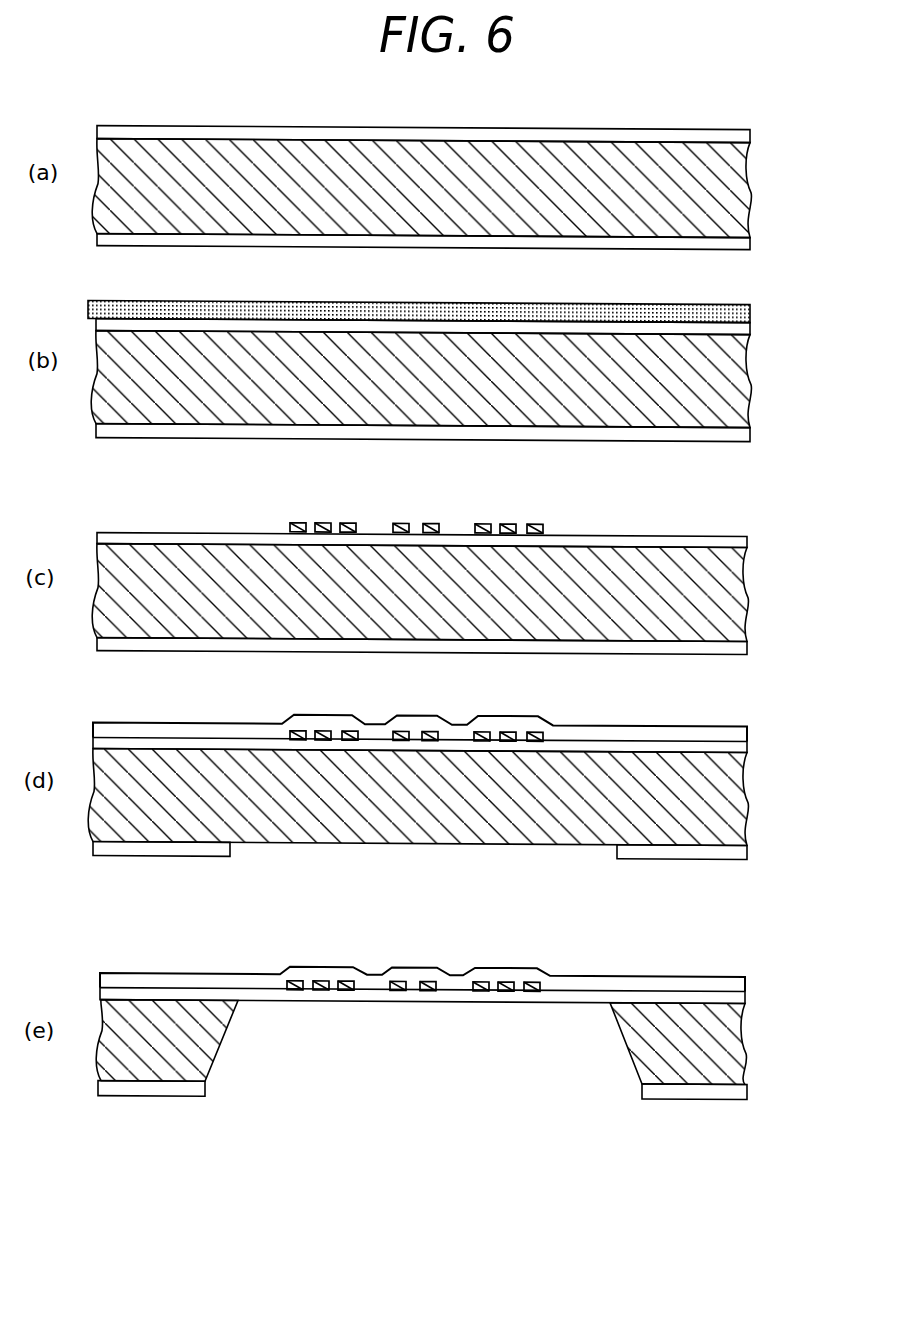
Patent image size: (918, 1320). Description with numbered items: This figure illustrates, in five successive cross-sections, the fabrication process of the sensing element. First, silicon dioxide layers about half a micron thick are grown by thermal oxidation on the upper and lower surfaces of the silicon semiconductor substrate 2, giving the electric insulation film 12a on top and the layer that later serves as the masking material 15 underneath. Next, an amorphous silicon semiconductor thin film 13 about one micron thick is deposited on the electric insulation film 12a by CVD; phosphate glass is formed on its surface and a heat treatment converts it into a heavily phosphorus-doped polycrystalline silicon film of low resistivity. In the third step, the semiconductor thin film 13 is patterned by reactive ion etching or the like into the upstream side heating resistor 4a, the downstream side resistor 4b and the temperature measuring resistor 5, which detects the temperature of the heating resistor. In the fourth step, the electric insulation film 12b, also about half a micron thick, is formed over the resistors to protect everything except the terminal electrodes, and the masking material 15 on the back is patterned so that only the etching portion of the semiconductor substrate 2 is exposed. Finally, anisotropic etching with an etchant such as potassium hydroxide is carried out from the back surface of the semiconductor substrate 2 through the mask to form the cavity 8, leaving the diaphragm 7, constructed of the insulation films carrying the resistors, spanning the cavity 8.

The semiconductor substrate 2 is at (736, 192).
The electric insulation film 12a is at (728, 137).
The electric insulation film 12b is at (688, 983).
The semiconductor thin film 13 is at (751, 311).
The masking material 15 is at (730, 245).
The upstream side heating resistor 4a is at (508, 523).
The downstream side resistor 4b is at (299, 523).
The temperature measuring resistor 5 is at (400, 523).
The diaphragm 7 is at (281, 976).
The cavity 8 is at (305, 1052).